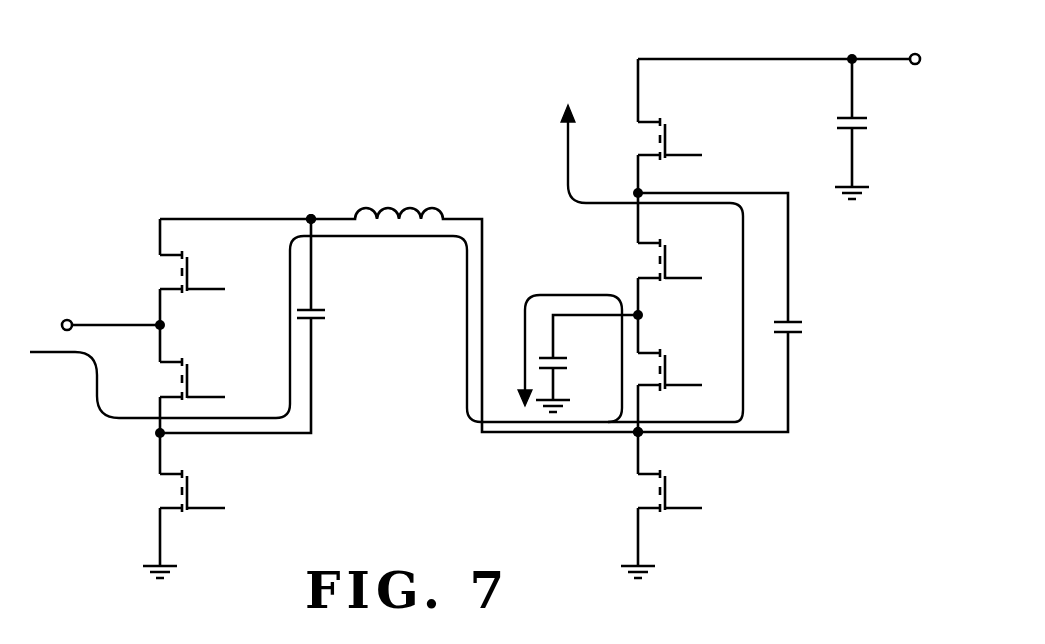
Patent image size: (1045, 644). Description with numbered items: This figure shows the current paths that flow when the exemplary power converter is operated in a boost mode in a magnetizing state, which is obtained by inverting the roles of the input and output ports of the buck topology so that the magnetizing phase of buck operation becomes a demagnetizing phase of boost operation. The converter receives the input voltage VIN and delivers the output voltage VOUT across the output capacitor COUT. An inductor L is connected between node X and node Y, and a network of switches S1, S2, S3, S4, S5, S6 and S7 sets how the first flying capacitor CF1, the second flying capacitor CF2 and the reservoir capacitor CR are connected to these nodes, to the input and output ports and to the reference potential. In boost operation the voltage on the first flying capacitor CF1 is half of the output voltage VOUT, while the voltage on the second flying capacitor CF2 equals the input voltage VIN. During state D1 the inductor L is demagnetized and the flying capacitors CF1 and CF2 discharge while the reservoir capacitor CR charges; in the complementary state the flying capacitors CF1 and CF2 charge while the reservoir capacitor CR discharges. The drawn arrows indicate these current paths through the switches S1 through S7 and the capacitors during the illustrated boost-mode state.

The switch S1 is at (648, 139).
The switch S2 is at (648, 261).
The switch S3 is at (648, 369).
The switch S4 is at (648, 491).
The switch S5 is at (170, 272).
The switch S6 is at (170, 379).
The switch S7 is at (170, 491).
The inductor L is at (474, 306).
The first flying capacitor CF1 is at (263, 326).
The second flying capacitor CF2 is at (741, 312).
The reservoir capacitor CR is at (565, 363).
The output capacitor COUT is at (879, 129).
The input voltage VIN is at (88, 328).
The output voltage VOUT is at (550, 121).
The node X is at (648, 446).
The node Y is at (304, 205).
The state D1 is at (386, 263).